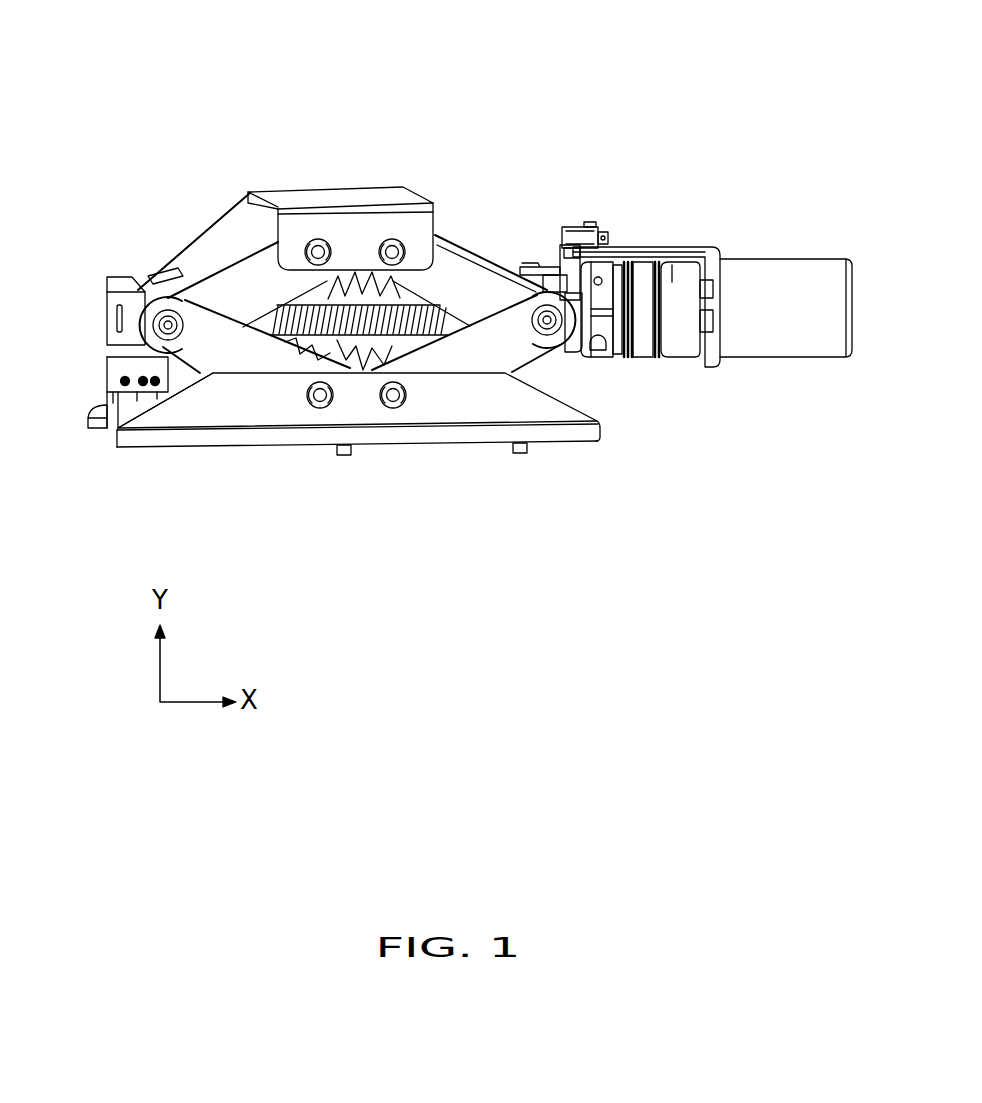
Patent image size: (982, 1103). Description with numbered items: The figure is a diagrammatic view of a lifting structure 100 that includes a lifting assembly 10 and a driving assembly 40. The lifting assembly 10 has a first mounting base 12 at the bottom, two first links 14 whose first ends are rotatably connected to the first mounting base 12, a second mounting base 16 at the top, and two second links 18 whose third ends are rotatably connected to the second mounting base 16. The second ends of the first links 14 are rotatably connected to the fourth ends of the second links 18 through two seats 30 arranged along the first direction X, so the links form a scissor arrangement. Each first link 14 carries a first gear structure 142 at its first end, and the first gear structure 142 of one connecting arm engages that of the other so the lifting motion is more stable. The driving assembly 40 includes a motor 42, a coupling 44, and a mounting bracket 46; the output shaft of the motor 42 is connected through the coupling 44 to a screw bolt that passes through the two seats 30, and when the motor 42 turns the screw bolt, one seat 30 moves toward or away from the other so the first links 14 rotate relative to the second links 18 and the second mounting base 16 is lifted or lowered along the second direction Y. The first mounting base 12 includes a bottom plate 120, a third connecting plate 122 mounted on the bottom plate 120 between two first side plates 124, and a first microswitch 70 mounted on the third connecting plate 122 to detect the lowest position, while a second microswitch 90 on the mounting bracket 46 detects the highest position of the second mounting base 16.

The lifting structure 100 is at (440, 34).
The lifting assembly 10 is at (278, 455).
The first mounting base 12 is at (117, 451).
The bottom plate 120 is at (88, 430).
The third connecting plate 122 is at (113, 417).
The first side plates 124 is at (165, 438).
The first links 14 is at (530, 357).
The first gear structure 142 is at (369, 375).
The second mounting base 16 is at (343, 191).
The second links 18 is at (212, 244).
The seats 30 is at (108, 283).
The driving assembly 40 is at (732, 299).
The motor 42 is at (778, 350).
The coupling 44 is at (676, 345).
The mounting bracket 46 is at (650, 252).
The first microswitch 70 is at (107, 378).
The second microswitch 90 is at (575, 225).